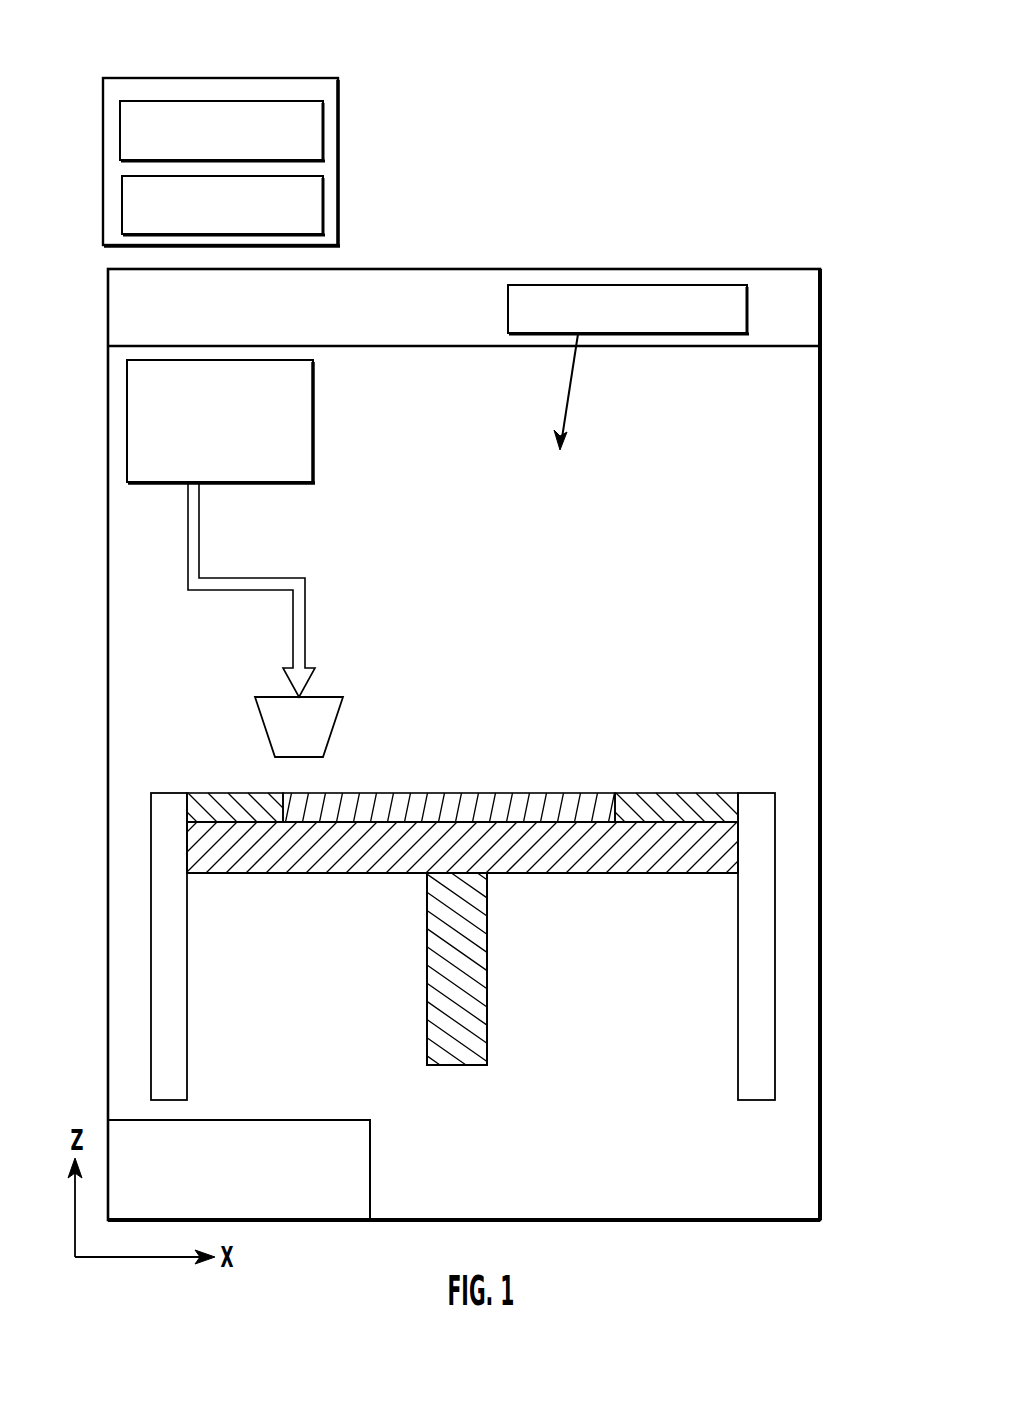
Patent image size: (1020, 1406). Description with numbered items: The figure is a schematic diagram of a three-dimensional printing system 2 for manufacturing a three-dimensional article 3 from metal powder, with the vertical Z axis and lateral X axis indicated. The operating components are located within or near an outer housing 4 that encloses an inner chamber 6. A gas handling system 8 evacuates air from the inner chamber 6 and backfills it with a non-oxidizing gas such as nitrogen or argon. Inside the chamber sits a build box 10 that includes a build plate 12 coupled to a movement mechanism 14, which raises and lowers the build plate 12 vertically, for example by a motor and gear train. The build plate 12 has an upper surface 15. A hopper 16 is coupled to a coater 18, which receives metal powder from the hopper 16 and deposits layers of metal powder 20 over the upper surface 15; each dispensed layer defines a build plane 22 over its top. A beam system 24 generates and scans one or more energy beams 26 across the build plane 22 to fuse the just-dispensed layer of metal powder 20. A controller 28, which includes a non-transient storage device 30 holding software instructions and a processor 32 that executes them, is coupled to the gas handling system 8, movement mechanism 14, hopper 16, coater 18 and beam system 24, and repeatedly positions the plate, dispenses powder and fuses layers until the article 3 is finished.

The three-dimensional (3D) printing system 2 is at (596, 78).
The three-dimensional (3D) article 3 is at (547, 806).
The outer housing 4 is at (820, 513).
The inner chamber 6 is at (686, 539).
The gas handling system 8 is at (133, 1120).
The build box 10 is at (775, 898).
The build plate 12 is at (712, 843).
The movement mechanism 14 is at (475, 977).
The upper surface 15 is at (660, 823).
The hopper 16 is at (127, 425).
The coater 18 is at (255, 705).
The layer of metal powder 20 is at (230, 796).
The build plane 22 is at (632, 793).
The beam system 24 is at (693, 285).
The energy beam 26 is at (572, 381).
The controller 28 is at (198, 78).
The non-transient storage device 30 is at (325, 210).
The processor 32 is at (325, 130).